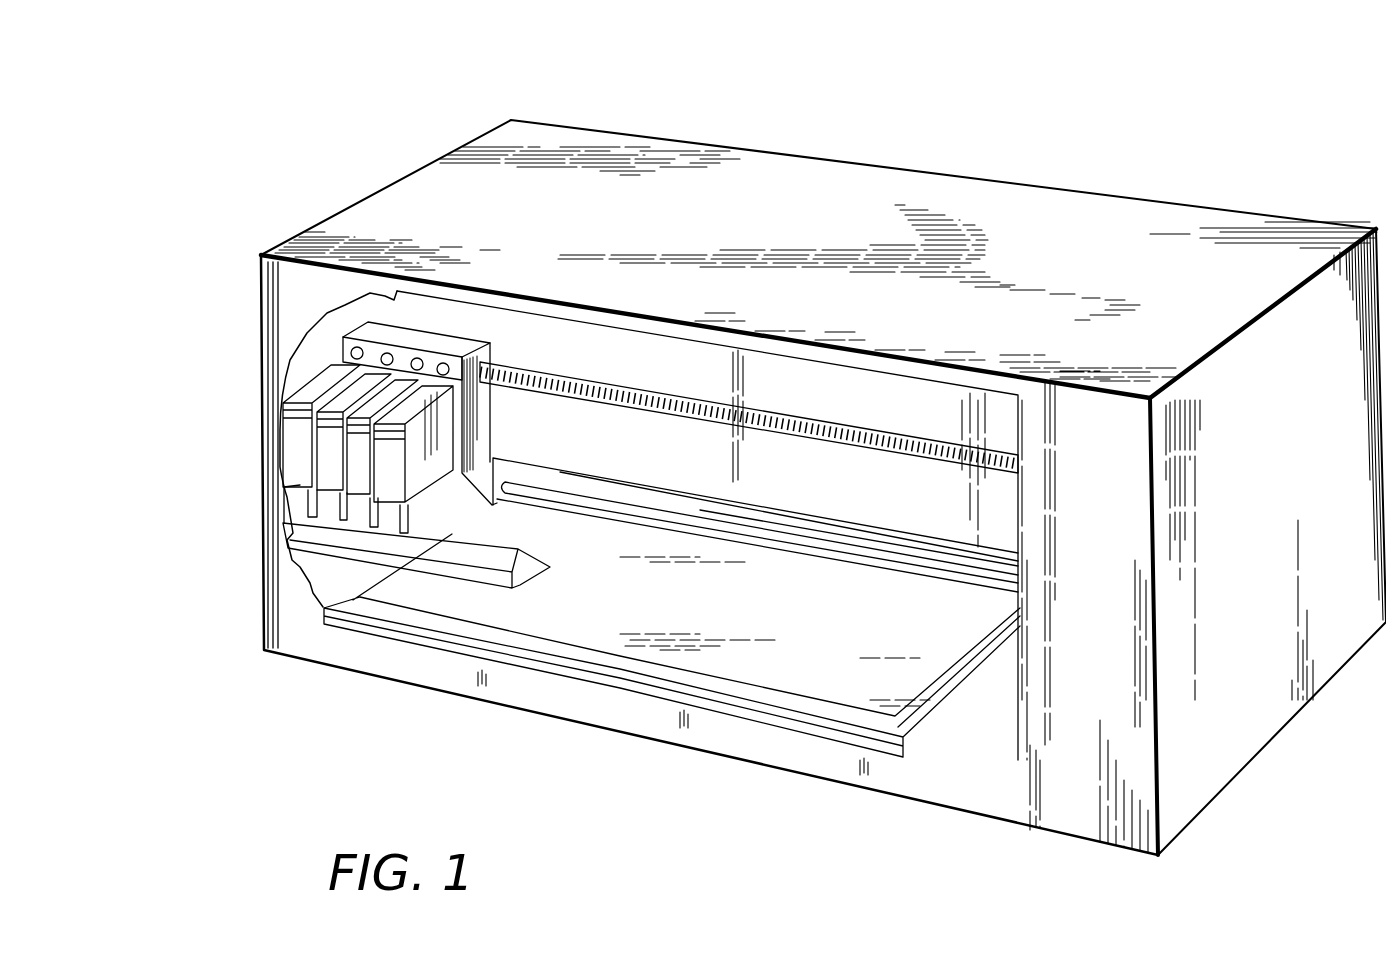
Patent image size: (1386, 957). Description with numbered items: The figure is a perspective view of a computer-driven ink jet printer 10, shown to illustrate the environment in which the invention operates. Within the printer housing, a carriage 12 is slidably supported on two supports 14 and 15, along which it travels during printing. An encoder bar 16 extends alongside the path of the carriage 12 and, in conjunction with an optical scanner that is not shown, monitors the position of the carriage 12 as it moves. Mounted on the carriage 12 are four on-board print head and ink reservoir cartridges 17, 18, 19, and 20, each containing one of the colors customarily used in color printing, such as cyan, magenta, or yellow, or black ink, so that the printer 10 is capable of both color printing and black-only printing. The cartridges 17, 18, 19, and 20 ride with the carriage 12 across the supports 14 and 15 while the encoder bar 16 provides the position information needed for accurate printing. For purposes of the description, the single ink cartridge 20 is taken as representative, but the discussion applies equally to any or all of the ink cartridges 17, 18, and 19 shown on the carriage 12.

The ink jet printer 10 is at (352, 141).
The carriage 12 is at (480, 428).
The support 14 is at (827, 543).
The support 15 is at (453, 563).
The encoder bar 16 is at (829, 421).
The print head and ink reservoir cartridge 17 is at (393, 475).
The print head and ink reservoir cartridge 18 is at (360, 465).
The print head and ink reservoir cartridge 19 is at (330, 453).
The ink cartridge 20 is at (298, 437).